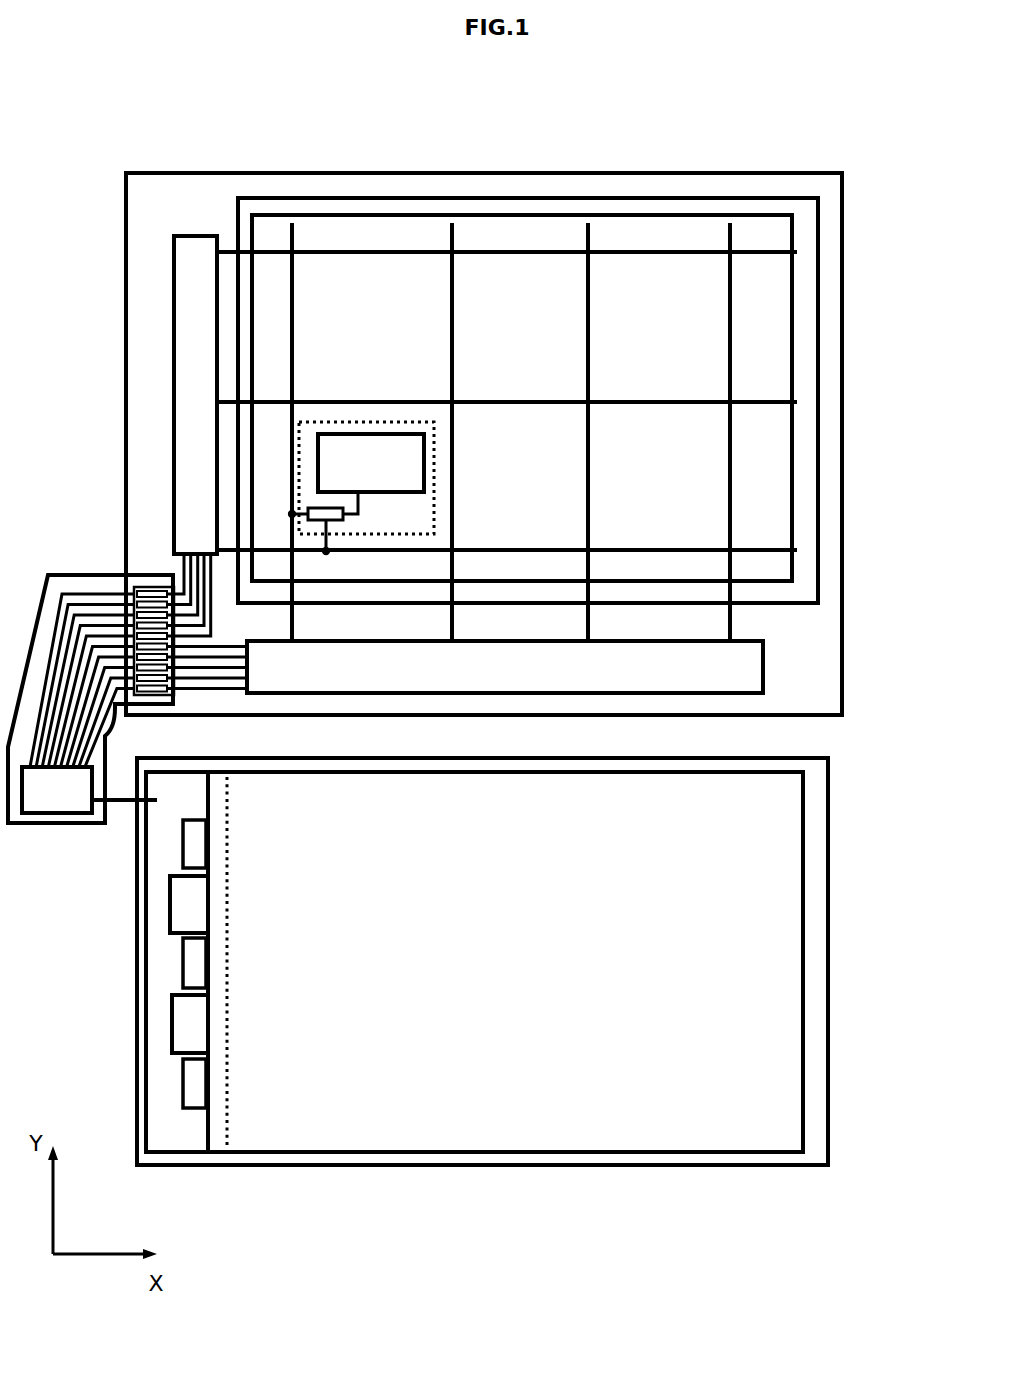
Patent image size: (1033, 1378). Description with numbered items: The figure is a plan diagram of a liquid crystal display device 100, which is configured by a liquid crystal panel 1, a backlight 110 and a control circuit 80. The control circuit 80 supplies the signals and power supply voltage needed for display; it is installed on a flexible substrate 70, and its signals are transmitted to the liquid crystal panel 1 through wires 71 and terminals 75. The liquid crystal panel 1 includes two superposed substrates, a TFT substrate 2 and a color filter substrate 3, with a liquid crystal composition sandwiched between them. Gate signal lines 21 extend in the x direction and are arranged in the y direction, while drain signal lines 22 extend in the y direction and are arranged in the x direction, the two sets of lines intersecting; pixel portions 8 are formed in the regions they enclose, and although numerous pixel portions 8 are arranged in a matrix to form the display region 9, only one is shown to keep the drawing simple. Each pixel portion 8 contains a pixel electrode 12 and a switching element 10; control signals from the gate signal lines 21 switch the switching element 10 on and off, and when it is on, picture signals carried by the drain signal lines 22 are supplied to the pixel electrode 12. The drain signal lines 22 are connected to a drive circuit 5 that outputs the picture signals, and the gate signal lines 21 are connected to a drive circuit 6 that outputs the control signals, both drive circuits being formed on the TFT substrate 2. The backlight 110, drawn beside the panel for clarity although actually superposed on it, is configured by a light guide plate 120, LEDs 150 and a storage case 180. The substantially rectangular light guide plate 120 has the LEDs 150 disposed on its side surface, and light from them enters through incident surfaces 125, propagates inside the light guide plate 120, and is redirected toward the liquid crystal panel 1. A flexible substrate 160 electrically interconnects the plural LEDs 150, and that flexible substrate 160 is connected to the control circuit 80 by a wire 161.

The liquid crystal panel 1 is at (500, 172).
The TFT substrate 2 is at (250, 183).
The color filter substrate 3 is at (334, 197).
The drive circuit 5 is at (766, 663).
The drive circuit 6 is at (187, 243).
The pixel portion 8 is at (436, 445).
The display region 9 is at (639, 225).
The switching element 10 is at (344, 519).
The pixel electrode 12 is at (382, 466).
The gate signal line 21 is at (505, 400).
The drain signal line 22 is at (293, 343).
The flexible substrate 70 is at (82, 579).
The wire 71 is at (58, 570).
The terminal 75 is at (152, 590).
The control circuit 80 is at (43, 801).
The liquid crystal display device 100 is at (436, 1192).
The backlight 110 is at (515, 1159).
The light guide plate 120 is at (588, 1147).
The incident surface 125 is at (204, 957).
The LED 150 is at (180, 1083).
The flexible substrate 160 is at (157, 1022).
The wire 161 is at (123, 806).
The storage case 180 is at (290, 1167).